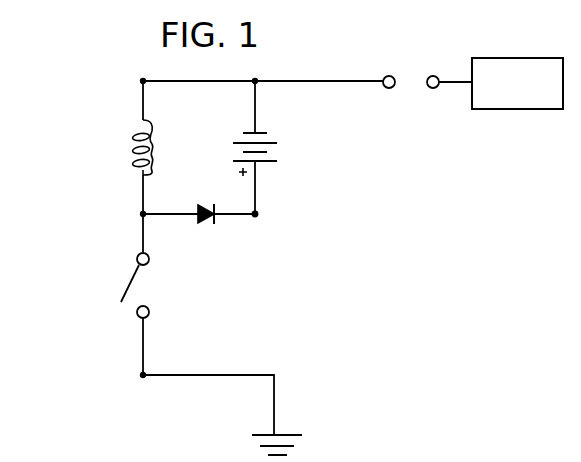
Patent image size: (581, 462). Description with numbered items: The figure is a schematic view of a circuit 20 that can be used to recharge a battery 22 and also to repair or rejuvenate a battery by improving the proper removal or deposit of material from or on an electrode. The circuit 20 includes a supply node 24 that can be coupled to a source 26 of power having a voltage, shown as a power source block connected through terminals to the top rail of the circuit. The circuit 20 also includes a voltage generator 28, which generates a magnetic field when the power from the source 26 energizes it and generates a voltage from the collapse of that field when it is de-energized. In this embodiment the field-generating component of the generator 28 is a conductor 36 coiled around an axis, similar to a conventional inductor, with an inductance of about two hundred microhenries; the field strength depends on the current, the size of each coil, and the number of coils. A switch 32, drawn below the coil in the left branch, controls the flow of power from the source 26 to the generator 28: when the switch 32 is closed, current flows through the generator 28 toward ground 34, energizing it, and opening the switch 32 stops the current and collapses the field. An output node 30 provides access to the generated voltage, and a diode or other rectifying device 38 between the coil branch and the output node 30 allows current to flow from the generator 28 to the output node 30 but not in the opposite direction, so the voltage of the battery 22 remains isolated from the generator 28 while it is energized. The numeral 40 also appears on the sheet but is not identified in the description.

The circuit 20 is at (101, 105).
The battery 22 is at (278, 142).
The supply node 24 is at (384, 77).
The source of power 26 is at (518, 58).
The voltage generator 28 is at (131, 137).
The output node 30 is at (262, 213).
The switch 32 is at (103, 320).
The ground 34 is at (290, 434).
The conductor 36 is at (136, 166).
The rectifying device 38 is at (216, 225).
The circuit 40 is at (571, 414).